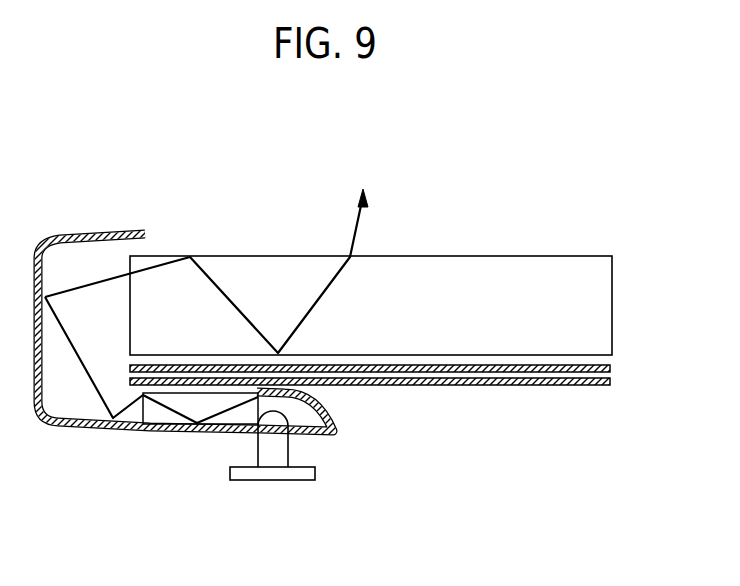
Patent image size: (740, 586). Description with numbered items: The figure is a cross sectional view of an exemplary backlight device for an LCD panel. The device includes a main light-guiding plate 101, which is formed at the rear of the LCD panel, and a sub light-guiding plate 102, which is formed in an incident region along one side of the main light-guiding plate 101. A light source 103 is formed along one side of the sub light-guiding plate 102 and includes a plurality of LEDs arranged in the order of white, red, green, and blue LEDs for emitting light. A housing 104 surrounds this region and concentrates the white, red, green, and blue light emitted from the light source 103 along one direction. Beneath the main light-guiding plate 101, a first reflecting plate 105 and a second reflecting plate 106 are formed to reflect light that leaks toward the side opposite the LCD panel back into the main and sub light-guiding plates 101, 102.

The main light-guiding plate 101 is at (612, 312).
The sub light-guiding plate 102 is at (155, 412).
The light source 103 is at (280, 448).
The housing 104 is at (63, 429).
The first reflecting plate 105 is at (611, 372).
The second reflecting plate 106 is at (595, 388).